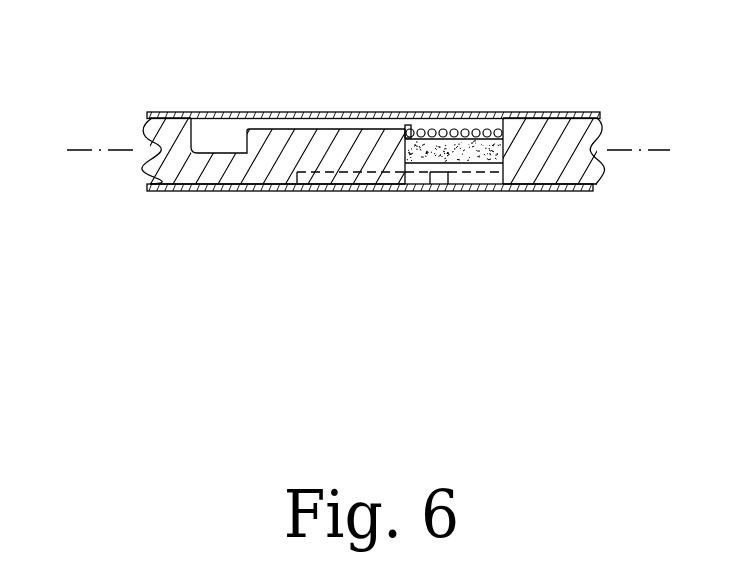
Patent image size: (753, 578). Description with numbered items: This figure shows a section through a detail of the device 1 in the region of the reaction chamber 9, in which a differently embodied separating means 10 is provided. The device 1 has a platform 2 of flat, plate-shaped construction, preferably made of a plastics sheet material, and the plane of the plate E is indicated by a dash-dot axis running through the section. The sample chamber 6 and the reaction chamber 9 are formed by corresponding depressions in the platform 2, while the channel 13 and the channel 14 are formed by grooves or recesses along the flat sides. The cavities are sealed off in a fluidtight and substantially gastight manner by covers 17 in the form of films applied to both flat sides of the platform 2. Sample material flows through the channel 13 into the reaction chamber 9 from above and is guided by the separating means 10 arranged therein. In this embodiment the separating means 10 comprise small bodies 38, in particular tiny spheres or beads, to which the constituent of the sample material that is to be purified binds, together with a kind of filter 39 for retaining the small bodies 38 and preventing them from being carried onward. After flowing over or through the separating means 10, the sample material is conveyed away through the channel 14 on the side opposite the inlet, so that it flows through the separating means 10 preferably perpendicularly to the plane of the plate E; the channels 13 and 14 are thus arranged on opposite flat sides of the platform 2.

The device 1 is at (237, 199).
The platform 2 is at (567, 155).
The sample chamber 6 is at (193, 140).
The reaction chamber 9 is at (490, 128).
The separating means 10 is at (514, 130).
The channel 13 is at (294, 122).
The channel 14 is at (323, 191).
The cover 17 is at (395, 112).
The small bodies 38 is at (427, 129).
The filter 39 is at (503, 154).
The plane of the plate E is at (80, 150).